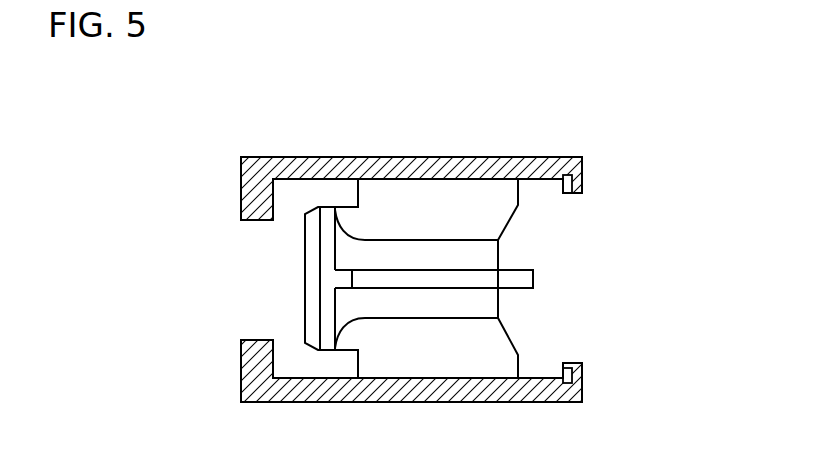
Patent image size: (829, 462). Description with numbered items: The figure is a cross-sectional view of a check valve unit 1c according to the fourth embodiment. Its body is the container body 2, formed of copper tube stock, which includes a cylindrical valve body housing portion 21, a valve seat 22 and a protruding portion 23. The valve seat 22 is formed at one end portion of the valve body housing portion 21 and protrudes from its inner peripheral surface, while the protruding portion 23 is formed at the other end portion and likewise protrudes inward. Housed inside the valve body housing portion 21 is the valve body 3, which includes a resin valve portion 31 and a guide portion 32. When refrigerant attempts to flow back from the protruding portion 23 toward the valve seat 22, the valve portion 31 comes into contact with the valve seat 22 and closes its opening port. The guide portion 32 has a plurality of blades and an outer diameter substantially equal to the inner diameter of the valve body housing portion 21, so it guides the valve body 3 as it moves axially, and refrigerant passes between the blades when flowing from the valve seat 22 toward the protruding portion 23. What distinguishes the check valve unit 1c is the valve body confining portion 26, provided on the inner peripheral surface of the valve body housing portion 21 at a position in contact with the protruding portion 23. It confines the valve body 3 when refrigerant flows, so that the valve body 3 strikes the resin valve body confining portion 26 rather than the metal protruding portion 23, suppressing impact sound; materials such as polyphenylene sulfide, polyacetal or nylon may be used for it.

The check valve unit 1c is at (617, 194).
The container body 2 is at (468, 160).
The valve body housing portion 21 is at (413, 156).
The valve seat 22 is at (275, 198).
The protruding portion 23 is at (587, 180).
The valve body confining portion 26 is at (557, 172).
The valve body 3 is at (427, 302).
The valve portion 31 is at (310, 297).
The guide portion 32 is at (467, 368).